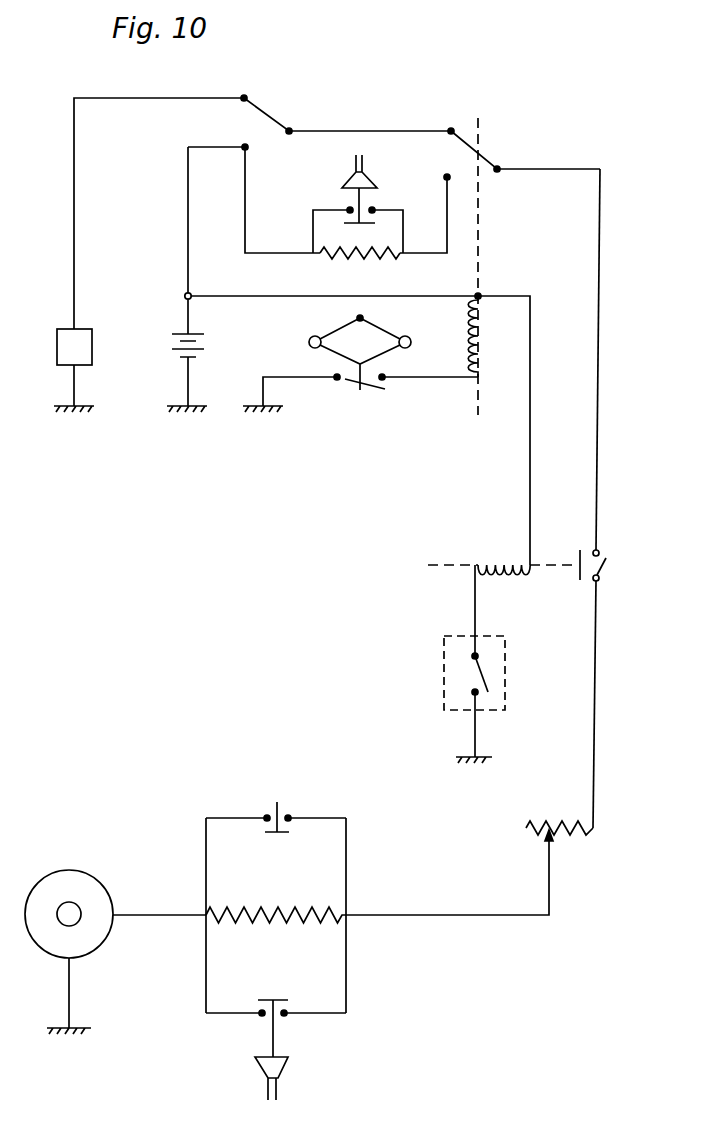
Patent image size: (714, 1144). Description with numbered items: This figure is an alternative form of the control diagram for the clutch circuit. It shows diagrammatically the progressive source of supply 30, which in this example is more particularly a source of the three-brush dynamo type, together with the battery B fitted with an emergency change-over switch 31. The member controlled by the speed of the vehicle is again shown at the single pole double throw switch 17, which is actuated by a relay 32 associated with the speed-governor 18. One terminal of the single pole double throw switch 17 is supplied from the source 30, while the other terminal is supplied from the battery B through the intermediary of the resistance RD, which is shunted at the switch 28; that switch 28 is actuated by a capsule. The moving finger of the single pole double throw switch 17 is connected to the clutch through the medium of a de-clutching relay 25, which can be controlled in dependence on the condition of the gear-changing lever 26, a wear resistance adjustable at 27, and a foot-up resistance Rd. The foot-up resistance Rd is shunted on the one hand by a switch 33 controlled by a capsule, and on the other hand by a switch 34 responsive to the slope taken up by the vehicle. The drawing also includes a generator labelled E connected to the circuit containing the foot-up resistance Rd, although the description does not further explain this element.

The progressive source of supply 30 is at (74, 367).
The emergency change-over switch 31 is at (268, 116).
The single pole double throw switch 17 is at (486, 160).
The switch 28 is at (373, 212).
The resistance RD is at (368, 258).
The battery B is at (172, 360).
The speed-governor 18 is at (335, 333).
The relay 32 is at (485, 346).
The de-clutching relay 25 is at (606, 558).
The gear-changing lever 26 is at (444, 680).
The wear resistance 27 is at (552, 890).
The generator E is at (70, 870).
The foot-up resistance Rd is at (277, 910).
The switch 34 is at (286, 813).
The switch 33 is at (280, 1020).